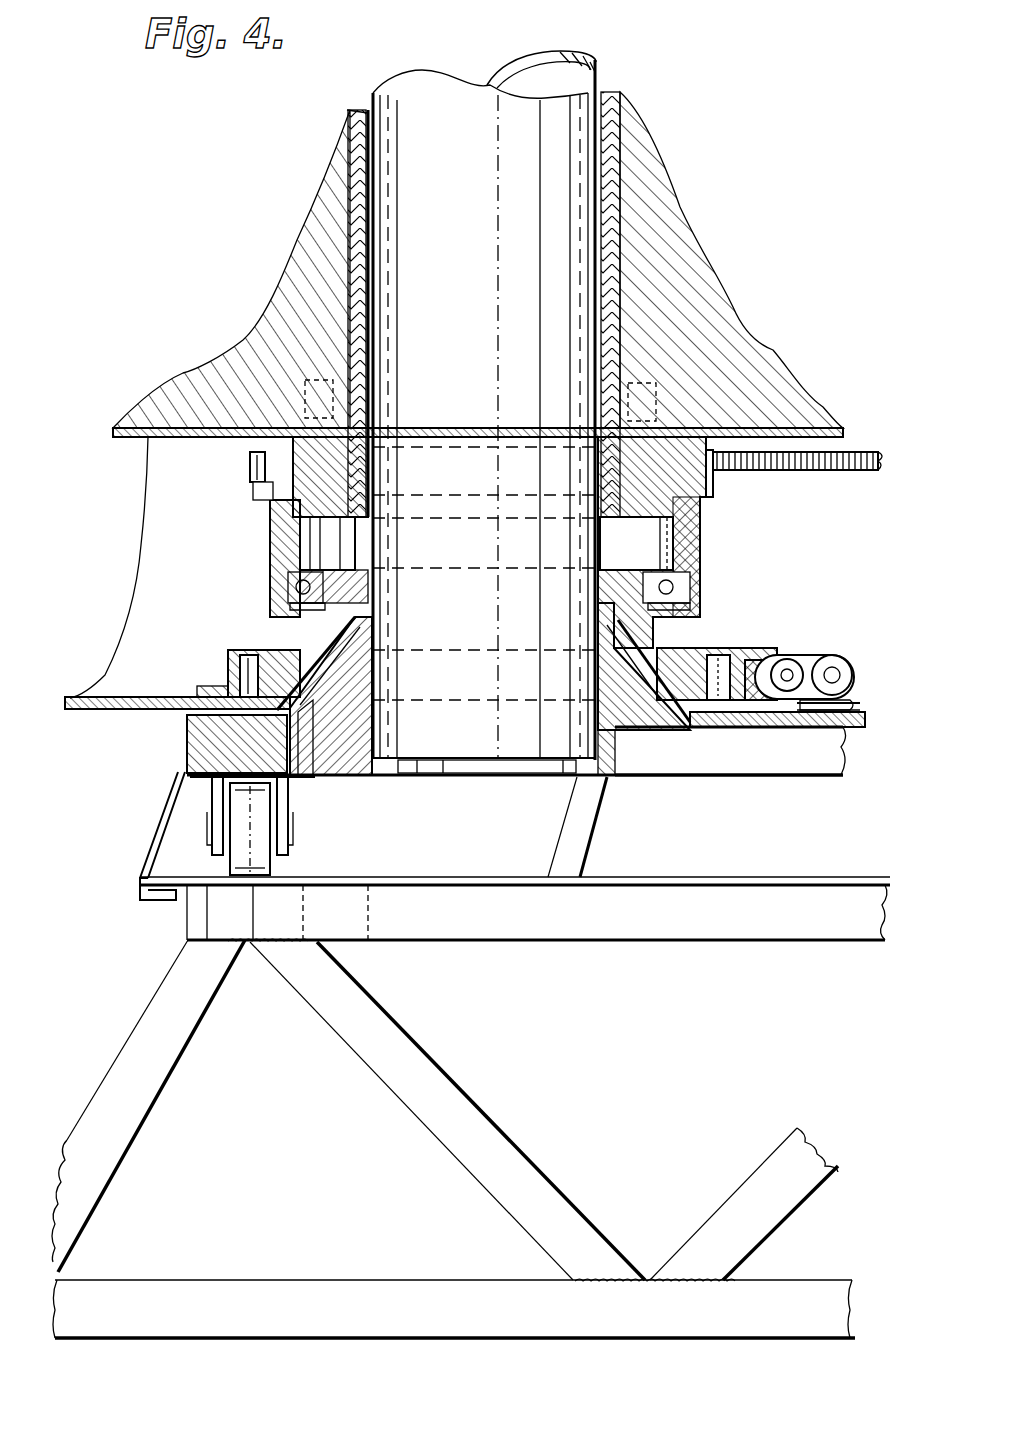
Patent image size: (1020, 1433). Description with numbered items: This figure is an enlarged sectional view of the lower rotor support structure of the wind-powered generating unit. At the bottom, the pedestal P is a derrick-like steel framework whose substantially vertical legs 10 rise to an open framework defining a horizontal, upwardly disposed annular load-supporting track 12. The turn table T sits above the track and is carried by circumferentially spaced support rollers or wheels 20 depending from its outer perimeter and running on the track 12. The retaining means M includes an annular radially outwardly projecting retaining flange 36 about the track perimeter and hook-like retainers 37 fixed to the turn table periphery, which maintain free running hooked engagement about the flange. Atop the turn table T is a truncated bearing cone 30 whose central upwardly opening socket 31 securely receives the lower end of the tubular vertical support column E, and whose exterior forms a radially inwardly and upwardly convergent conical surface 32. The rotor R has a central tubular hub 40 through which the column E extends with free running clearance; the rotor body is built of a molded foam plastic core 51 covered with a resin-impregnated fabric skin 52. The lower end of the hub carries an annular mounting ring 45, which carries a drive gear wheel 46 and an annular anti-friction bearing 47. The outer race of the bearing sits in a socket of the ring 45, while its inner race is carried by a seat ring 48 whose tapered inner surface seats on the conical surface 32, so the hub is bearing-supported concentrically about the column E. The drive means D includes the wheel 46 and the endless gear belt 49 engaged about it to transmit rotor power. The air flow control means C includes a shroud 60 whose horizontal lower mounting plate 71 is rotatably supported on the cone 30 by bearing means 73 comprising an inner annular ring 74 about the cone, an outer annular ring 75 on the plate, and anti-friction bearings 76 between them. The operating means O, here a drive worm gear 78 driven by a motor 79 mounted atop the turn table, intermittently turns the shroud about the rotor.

The vertical support column E is at (600, 62).
The tubular hub 40 is at (612, 93).
The rotor R is at (702, 244).
The core 51 is at (770, 368).
The skin 52 is at (845, 425).
The gear belt 49 is at (870, 453).
The drive means D is at (718, 493).
The mounting ring 45 is at (702, 524).
The seat ring 48 is at (348, 556).
The anti-friction bearing 47 is at (293, 583).
The drive gear wheel 46 is at (250, 466).
The air flow control means C is at (143, 546).
The shroud 60 is at (132, 622).
The lower mounting plate 71 is at (110, 697).
The bearing means 73 is at (228, 660).
The truncated bearing cone 30 is at (376, 643).
The socket 31 is at (385, 680).
The turn table T is at (770, 781).
The conical surface 32 is at (690, 636).
The inner annular ring 74 is at (716, 650).
The anti-friction bearing 76 is at (746, 652).
The motor 79 is at (855, 672).
The outer annular ring 75 is at (792, 658).
The drive worm gear 78 is at (838, 655).
The operating means O is at (855, 698).
The retaining means M is at (172, 792).
The support roller 20 is at (262, 825).
The hook-like retainer 37 is at (145, 850).
The annular load-supporting track 12 is at (478, 878).
The retaining flange 36 is at (410, 878).
The pedestal P is at (780, 876).
The leg 10 is at (124, 1040).